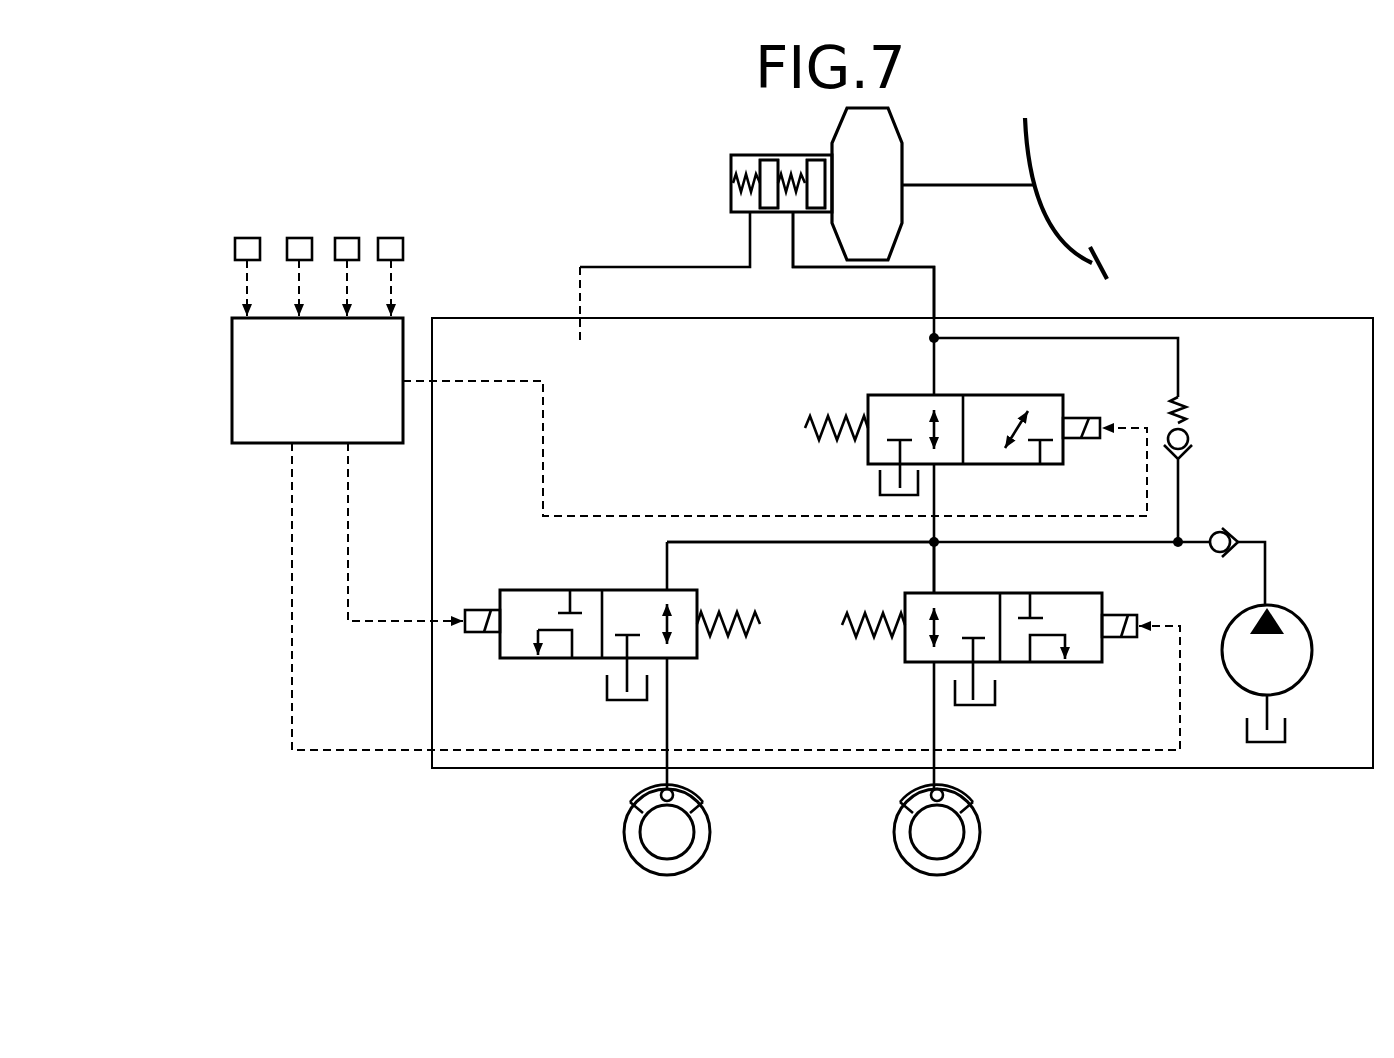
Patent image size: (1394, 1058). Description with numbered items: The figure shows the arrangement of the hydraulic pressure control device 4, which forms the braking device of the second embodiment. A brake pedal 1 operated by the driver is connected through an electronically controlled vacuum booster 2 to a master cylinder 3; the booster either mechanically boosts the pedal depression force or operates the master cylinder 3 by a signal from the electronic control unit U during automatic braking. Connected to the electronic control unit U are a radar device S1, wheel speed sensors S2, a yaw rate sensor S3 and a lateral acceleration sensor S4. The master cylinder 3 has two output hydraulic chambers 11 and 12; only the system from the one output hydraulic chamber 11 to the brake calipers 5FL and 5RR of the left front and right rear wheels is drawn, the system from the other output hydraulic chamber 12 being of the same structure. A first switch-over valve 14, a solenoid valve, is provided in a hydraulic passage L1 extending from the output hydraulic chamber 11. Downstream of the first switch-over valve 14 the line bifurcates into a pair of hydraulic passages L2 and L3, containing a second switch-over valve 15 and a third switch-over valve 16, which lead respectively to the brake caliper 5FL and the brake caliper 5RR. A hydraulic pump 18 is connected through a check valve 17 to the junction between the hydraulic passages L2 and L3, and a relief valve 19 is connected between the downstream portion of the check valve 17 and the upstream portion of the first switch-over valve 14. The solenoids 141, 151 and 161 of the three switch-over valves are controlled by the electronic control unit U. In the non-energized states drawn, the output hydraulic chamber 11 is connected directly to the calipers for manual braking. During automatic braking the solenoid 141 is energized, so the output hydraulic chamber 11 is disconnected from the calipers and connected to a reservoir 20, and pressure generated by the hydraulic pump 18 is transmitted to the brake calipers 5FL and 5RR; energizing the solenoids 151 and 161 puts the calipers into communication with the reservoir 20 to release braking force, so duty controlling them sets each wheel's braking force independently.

The brake pedal 1 is at (1057, 222).
The electronically controlled vacuum booster 2 is at (905, 157).
The master cylinder 3 is at (752, 155).
The hydraulic pressure control device 4 is at (1237, 318).
The output hydraulic chamber 11 is at (788, 206).
The output hydraulic chamber 12 is at (745, 200).
The first switch-over valve 14 is at (1066, 393).
The solenoid 141 is at (1090, 440).
The second switch-over valve 15 is at (563, 588).
The solenoid 151 is at (480, 635).
The third switch-over valve 16 is at (1051, 666).
The solenoid 161 is at (1120, 640).
The check valve 17 is at (1228, 528).
The hydraulic pump 18 is at (1305, 681).
The relief valve 19 is at (1190, 432).
The reservoir 20 is at (880, 483).
The brake caliper 5FL is at (712, 840).
The brake caliper 5RR is at (980, 842).
The hydraulic passage L1 is at (830, 268).
The hydraulic passage L2 is at (800, 544).
The hydraulic passage L3 is at (935, 570).
The radar device S1 is at (247, 238).
The wheel speed sensors S2 is at (299, 238).
The yaw rate sensor S3 is at (347, 238).
The lateral acceleration sensor S4 is at (391, 238).
The electronic control unit U is at (310, 401).